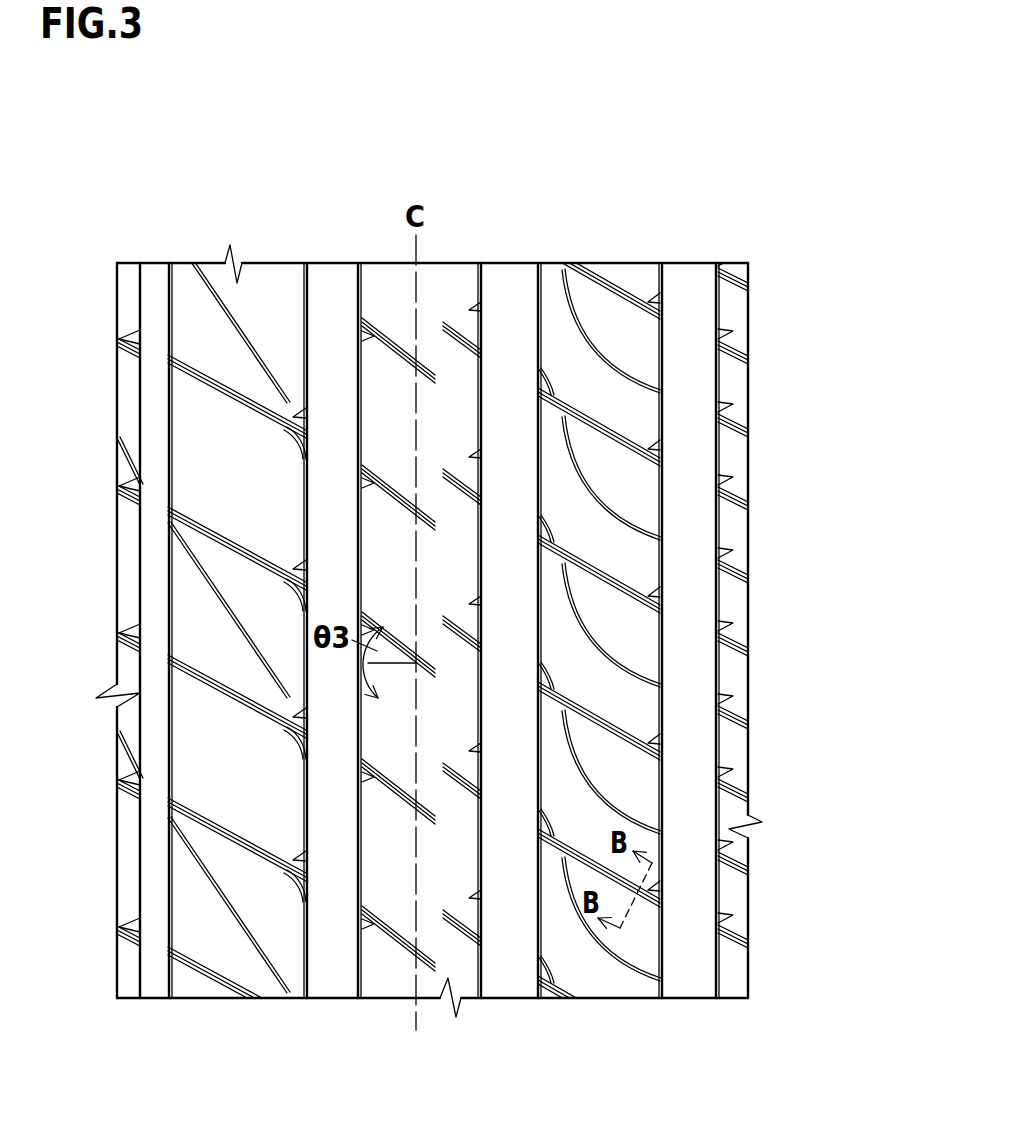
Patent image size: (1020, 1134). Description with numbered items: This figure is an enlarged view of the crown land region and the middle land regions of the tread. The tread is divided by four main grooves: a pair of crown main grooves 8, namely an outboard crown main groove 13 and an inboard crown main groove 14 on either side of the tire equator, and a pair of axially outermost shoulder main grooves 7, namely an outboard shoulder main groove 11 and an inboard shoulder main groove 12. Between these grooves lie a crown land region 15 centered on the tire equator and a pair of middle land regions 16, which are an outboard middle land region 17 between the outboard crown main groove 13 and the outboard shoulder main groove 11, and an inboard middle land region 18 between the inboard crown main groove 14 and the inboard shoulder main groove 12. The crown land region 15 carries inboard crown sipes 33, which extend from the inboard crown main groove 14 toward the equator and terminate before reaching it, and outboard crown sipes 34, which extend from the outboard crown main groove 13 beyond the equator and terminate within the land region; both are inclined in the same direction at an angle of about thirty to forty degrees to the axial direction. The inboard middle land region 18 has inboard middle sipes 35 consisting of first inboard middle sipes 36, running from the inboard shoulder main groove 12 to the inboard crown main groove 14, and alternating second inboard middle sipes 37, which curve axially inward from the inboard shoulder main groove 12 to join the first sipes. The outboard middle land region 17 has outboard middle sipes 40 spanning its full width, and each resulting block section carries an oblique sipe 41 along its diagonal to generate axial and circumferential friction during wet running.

The shoulder main grooves 7 is at (420, 677).
The outboard shoulder main groove 11 is at (153, 963).
The inboard shoulder main groove 12 is at (688, 965).
The crown main grooves 8 is at (405, 677).
The outboard crown main groove 13 is at (333, 962).
The inboard crown main groove 14 is at (507, 968).
The crown land region 15 is at (597, 620).
The middle land regions 16 is at (462, 638).
The outboard middle land region 17 is at (173, 601).
The inboard middle land region 18 is at (715, 638).
The inboard crown sipes 33 is at (457, 470).
The outboard crown sipes 34 is at (402, 642).
The inboard middle sipes 35 is at (715, 674).
The first inboard middle sipes 36 is at (598, 432).
The second inboard middle sipes 37 is at (620, 512).
The outboard middle sipes 40 is at (226, 390).
The oblique sipe 41 is at (225, 611).